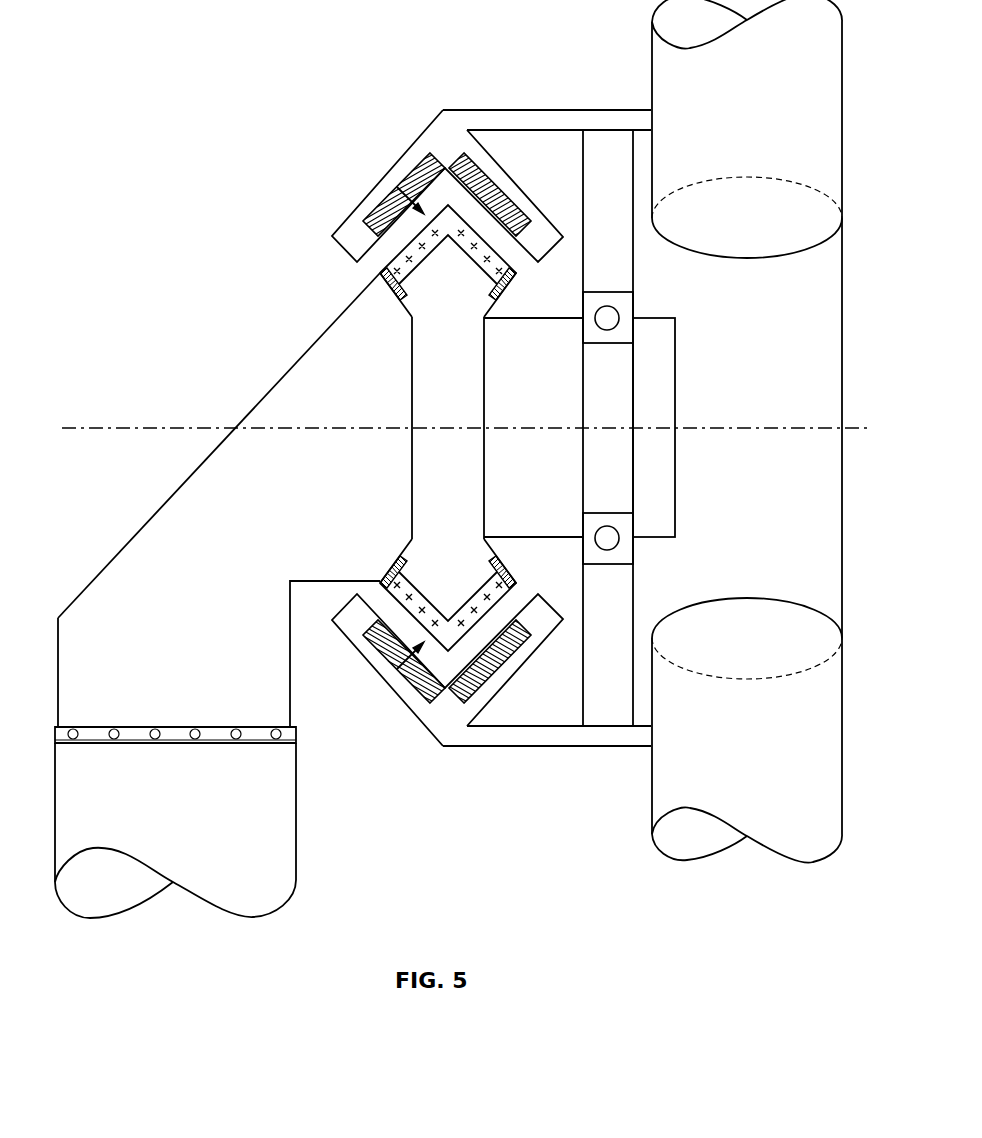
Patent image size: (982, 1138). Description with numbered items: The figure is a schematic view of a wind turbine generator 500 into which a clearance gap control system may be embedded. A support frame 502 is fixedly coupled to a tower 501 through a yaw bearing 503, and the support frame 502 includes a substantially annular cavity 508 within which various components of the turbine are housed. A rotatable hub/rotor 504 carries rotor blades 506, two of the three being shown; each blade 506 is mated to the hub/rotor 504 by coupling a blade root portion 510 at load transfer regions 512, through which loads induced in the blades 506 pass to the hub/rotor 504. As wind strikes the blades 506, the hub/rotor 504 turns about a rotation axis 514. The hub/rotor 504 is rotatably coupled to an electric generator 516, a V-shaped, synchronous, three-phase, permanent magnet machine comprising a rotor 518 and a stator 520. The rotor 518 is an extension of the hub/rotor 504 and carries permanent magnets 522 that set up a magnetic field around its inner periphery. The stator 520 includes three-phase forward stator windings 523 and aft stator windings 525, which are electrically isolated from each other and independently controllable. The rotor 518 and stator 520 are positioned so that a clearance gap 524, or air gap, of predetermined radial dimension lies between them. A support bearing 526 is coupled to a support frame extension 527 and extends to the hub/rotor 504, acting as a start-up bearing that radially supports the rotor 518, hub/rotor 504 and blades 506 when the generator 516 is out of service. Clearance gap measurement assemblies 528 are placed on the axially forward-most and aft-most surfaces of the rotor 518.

The wind turbine generator 500 is at (118, 44).
The tower 501 is at (198, 814).
The support frame 502 is at (250, 425).
The yaw bearing 503 is at (250, 727).
The hub/rotor 504 is at (840, 352).
The rotor blades 506 is at (773, 124).
The annular cavity 508 is at (283, 504).
The blade root portion 510 is at (818, 133).
The load transfer regions 512 is at (818, 220).
The rotation axis 514 is at (822, 426).
The electric generator 516 is at (432, 102).
The rotor 518 is at (402, 158).
The stator 520 is at (473, 421).
The permanent magnets 522 is at (466, 172).
The forward stator windings 523 is at (472, 256).
The clearance gap 524 is at (397, 187).
The aft stator windings 525 is at (411, 274).
The support bearing 526 is at (625, 258).
The support frame extension 527 is at (666, 463).
The clearance gap measurement assemblies 528 is at (375, 278).